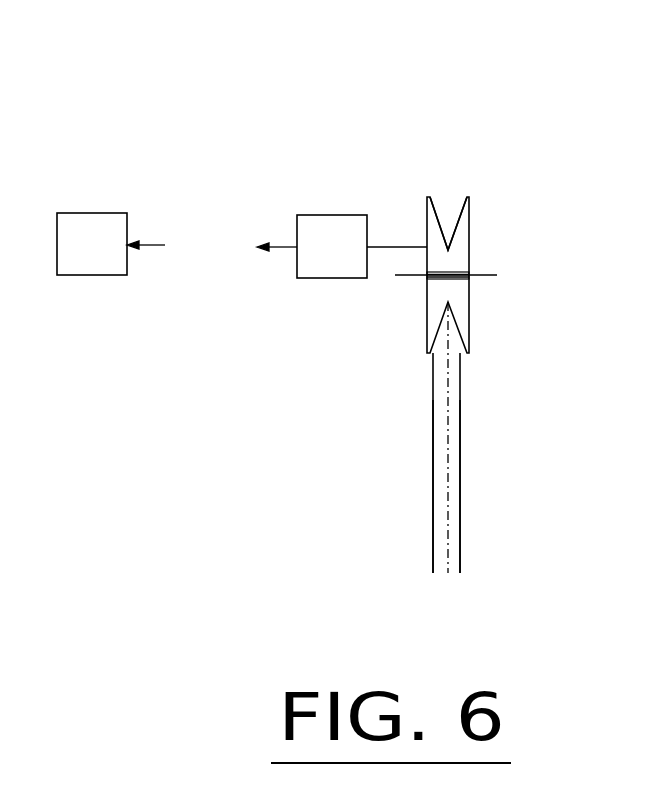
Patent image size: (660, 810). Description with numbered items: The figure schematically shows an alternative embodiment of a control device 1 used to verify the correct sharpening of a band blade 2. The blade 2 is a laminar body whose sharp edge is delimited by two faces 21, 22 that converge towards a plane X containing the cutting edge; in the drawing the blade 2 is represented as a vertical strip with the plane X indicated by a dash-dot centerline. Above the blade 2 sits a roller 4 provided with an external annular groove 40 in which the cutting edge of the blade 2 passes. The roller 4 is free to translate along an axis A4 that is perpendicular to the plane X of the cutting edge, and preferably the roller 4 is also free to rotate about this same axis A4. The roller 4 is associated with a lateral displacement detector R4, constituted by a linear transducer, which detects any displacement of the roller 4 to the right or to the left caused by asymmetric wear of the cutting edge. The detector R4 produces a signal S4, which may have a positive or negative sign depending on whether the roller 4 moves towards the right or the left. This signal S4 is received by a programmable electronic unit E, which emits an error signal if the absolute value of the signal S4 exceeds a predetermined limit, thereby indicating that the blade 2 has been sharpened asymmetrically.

The control device 1 is at (335, 166).
The band blade 2 is at (408, 438).
The first face of the cutting edge 21 is at (433, 518).
The second face of the cutting edge 22 is at (462, 445).
The roller 4 is at (484, 211).
The external annular groove 40 is at (448, 213).
The axis A4 is at (410, 278).
The lateral displacement detector R4 is at (310, 278).
The displacement signal S4 is at (242, 244).
The programmable electronic unit E is at (111, 244).
The plane of the cutting edge X is at (450, 545).